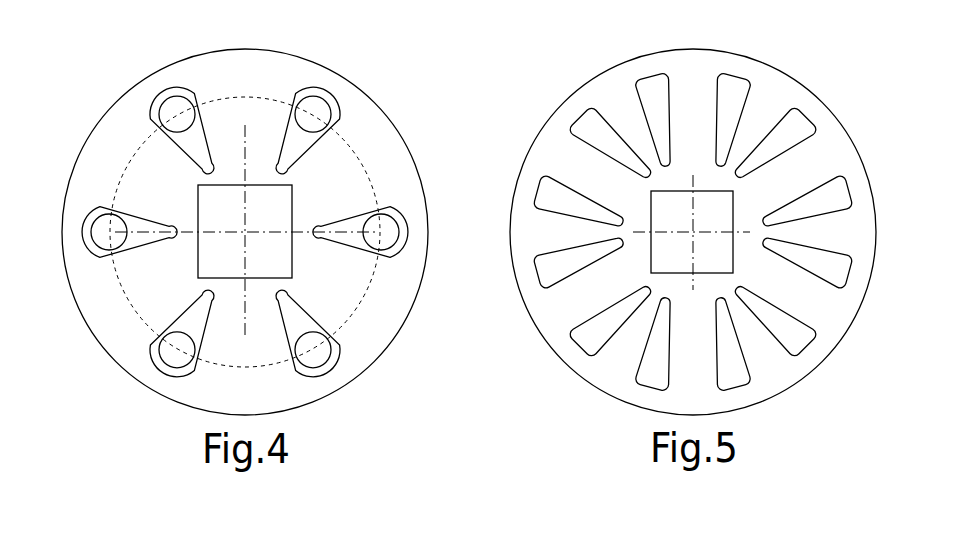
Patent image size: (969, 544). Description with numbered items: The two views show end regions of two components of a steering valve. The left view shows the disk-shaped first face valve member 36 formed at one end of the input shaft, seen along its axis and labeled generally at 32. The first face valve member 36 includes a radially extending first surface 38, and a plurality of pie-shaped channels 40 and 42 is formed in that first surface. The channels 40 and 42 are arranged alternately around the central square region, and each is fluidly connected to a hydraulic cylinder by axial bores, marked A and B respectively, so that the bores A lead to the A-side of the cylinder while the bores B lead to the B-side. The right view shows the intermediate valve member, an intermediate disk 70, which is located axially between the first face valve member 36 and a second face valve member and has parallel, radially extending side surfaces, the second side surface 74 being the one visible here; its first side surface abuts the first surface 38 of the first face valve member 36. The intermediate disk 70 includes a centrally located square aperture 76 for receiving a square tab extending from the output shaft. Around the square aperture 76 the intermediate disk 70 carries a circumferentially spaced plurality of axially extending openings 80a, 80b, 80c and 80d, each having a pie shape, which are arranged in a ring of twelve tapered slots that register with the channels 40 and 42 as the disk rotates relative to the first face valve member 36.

In FIG. 4, the rotor disc 32 is at (425, 304).
In FIG. 4, the first face valve member 36 is at (388, 148).
In FIG. 4, the first surface 38 is at (108, 147).
In FIG. 4, the pie-shaped channel 40 is at (315, 90).
In FIG. 4, the pie-shaped channel 42 is at (183, 88).
In FIG. 5, the intermediate disk 70 is at (847, 109).
In FIG. 5, the second side surface 74 is at (866, 242).
In FIG. 5, the square aperture 76 is at (733, 263).
In FIG. 5, the axially extending opening 80a is at (802, 125).
In FIG. 5, the axially extending opening 80b is at (733, 83).
In FIG. 5, the axially extending opening 80c is at (653, 83).
In FIG. 5, the axially extending opening 80d is at (582, 124).